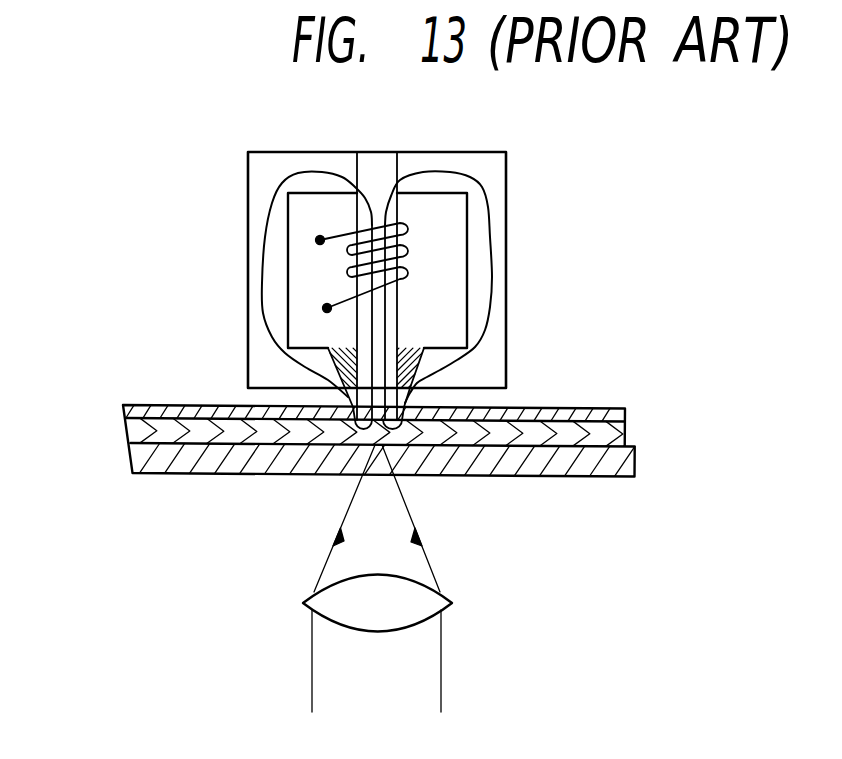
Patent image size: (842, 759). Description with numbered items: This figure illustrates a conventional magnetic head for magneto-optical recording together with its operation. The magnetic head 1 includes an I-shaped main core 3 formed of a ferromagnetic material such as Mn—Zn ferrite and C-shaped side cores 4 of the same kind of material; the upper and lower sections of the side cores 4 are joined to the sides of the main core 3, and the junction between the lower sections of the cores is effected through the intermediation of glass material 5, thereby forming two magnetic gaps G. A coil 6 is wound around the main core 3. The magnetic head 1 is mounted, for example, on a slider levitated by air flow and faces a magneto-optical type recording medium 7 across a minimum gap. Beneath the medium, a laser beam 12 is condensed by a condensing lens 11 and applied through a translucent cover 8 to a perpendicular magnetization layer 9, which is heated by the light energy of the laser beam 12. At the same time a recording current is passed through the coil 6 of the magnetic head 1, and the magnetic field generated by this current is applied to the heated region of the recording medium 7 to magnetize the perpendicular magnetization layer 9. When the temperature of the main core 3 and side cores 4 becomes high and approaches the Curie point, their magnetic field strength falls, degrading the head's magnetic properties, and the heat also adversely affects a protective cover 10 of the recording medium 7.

The magnetic head 1 is at (517, 207).
The main core 3 is at (377, 163).
The side cores 4 is at (262, 186).
The glass material 5 is at (345, 352).
The coil 6 is at (325, 308).
The magnetic gaps G is at (347, 400).
The recording medium 7 is at (369, 450).
The translucent cover 8 is at (573, 467).
The perpendicular magnetization layer 9 is at (632, 433).
The protective cover 10 is at (607, 413).
The condensing lens 11 is at (372, 620).
The laser beam 12 is at (427, 560).